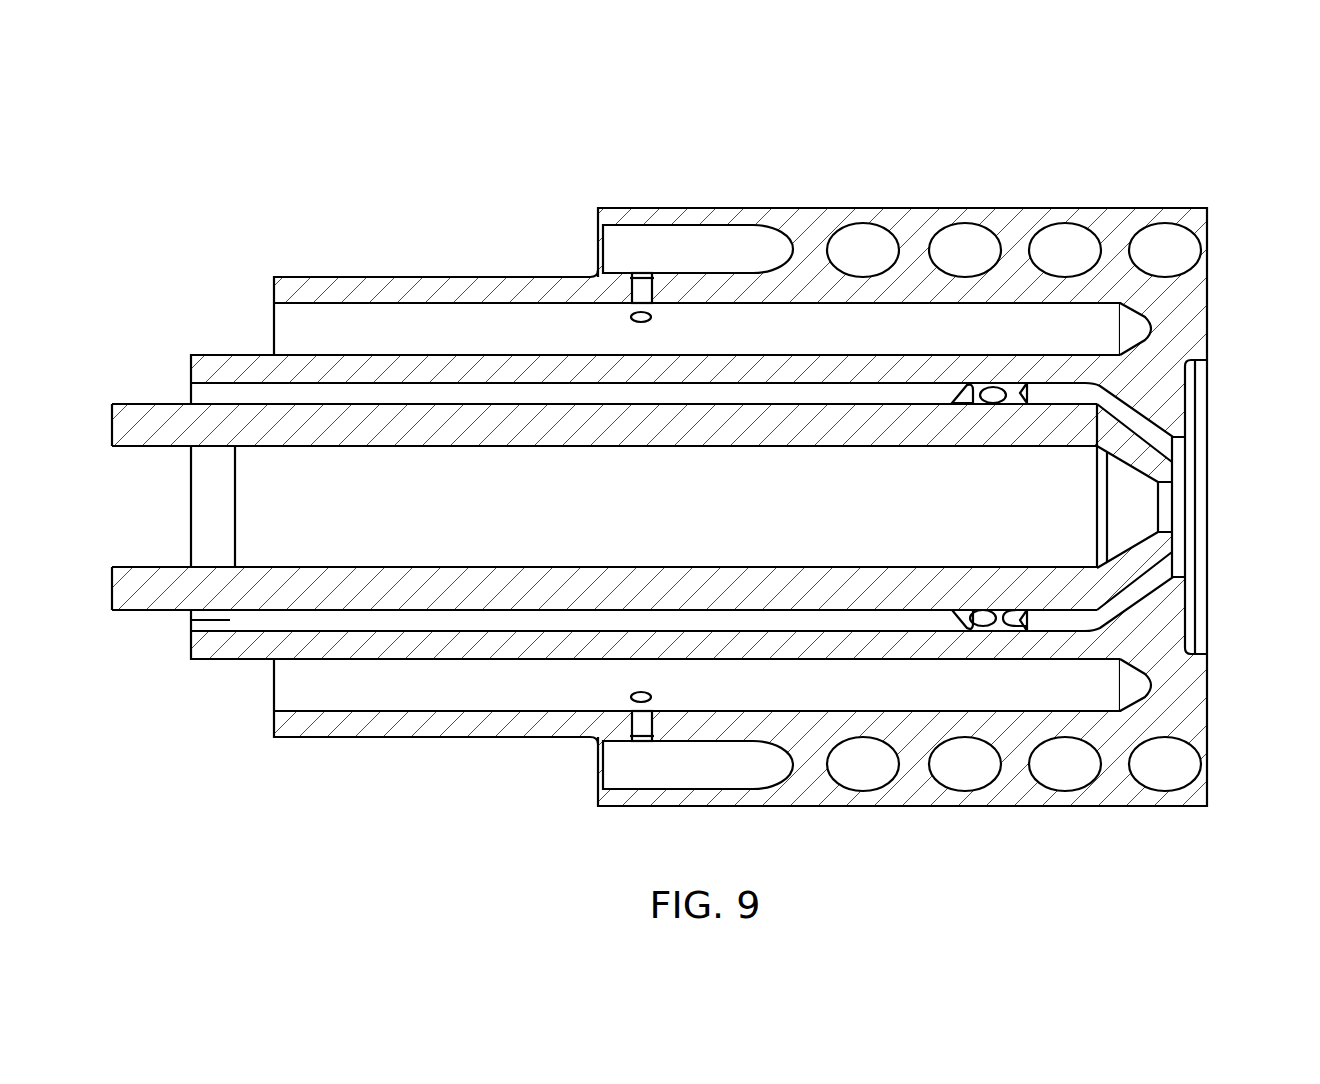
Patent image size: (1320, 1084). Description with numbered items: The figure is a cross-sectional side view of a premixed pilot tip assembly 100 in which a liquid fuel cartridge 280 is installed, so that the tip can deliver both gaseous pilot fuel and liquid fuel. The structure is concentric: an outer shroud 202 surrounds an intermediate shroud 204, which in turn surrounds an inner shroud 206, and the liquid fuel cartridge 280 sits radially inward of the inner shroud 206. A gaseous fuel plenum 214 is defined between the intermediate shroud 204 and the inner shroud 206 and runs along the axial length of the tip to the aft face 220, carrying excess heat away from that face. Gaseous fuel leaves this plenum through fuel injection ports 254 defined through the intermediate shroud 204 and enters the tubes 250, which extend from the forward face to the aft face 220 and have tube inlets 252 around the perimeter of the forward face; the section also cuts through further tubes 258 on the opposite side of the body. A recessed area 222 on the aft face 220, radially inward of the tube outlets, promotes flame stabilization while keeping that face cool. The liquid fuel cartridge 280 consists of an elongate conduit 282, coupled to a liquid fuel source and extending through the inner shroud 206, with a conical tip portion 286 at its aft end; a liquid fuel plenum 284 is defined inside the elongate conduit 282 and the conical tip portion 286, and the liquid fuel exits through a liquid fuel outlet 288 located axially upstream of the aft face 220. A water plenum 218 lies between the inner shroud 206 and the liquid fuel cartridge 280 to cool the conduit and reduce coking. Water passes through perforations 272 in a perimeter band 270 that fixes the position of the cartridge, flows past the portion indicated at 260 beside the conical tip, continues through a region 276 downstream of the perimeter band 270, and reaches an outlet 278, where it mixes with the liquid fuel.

The connector assembly 100 is at (475, 130).
The outer shroud 202 is at (804, 208).
The intermediate shroud 204 is at (418, 277).
The inner shroud 206 is at (208, 355).
The gaseous fuel plenum 214 is at (335, 713).
The water plenum 218 is at (240, 620).
The aft face 220 is at (1208, 292).
The recessed area 222 is at (1200, 390).
The tubes 250 is at (845, 775).
The tube inlets 252 is at (598, 240).
The fuel injection ports 254 is at (632, 272).
The upper bores 258 is at (960, 248).
The pointed projection 260 is at (1105, 418).
The perimeter band 270 is at (1009, 392).
The perforations 272 is at (1110, 598).
The region 276 is at (1180, 615).
The outlet 278 is at (1185, 563).
The liquid fuel cartridge 280 is at (168, 434).
The elongate conduit 282 is at (148, 595).
The liquid fuel plenum 284 is at (258, 531).
The conical tip portion 286 is at (1140, 460).
The liquid fuel outlet 288 is at (1162, 505).